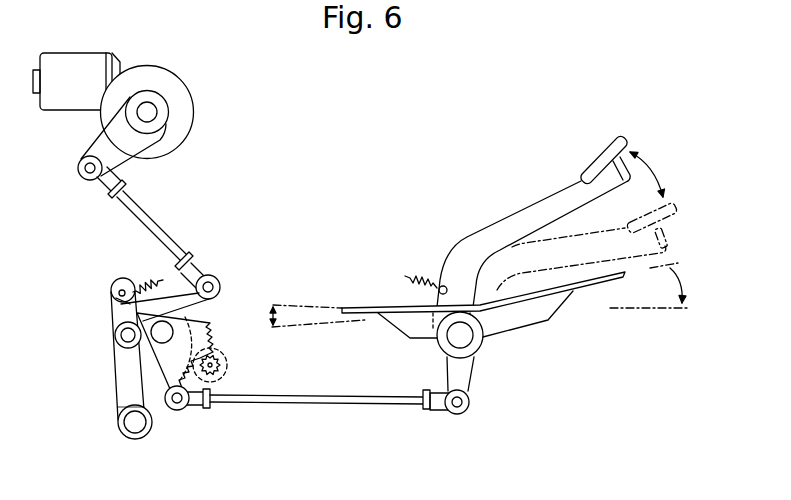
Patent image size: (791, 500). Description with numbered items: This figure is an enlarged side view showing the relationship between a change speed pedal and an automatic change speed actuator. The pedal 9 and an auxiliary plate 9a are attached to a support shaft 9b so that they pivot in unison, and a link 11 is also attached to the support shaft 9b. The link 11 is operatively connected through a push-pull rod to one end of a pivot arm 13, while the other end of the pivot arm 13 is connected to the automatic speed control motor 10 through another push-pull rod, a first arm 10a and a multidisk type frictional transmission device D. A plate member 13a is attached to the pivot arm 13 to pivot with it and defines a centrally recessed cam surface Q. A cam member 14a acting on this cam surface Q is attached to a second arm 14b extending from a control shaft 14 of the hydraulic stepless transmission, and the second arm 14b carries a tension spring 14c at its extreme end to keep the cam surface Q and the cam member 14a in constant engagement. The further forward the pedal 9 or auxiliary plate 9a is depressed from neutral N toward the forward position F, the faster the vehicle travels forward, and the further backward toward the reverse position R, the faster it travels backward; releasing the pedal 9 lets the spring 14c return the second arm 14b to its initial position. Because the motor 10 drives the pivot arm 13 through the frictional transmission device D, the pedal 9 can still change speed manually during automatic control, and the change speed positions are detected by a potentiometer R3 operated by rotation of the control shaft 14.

The pedal 9 is at (598, 155).
The auxiliary plate 9a is at (587, 290).
The support shaft 9b is at (463, 338).
The automatic speed control motor 10 is at (63, 102).
The first arm 10a is at (115, 153).
The link 11 is at (467, 382).
The pivot arm 13 is at (157, 370).
The plate member 13a is at (116, 299).
The control shaft 14 is at (150, 428).
The cam member 14a is at (122, 343).
The second arm 14b is at (122, 404).
The tension spring 14c is at (143, 281).
The multidisk type frictional transmission device D is at (187, 113).
The cam surface Q is at (132, 321).
The potentiometer R3 is at (232, 370).
The neutral N is at (473, 287).
The reverse position line R is at (305, 329).
The forward position line F is at (658, 294).